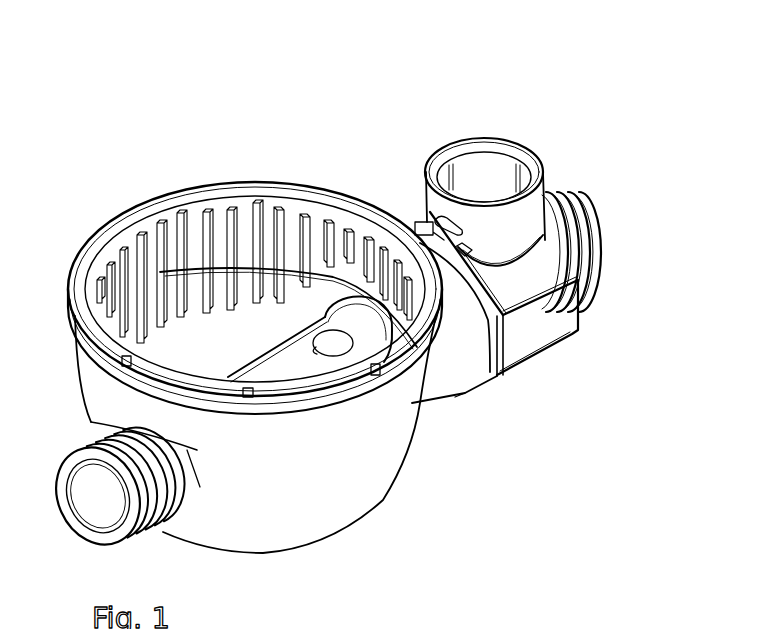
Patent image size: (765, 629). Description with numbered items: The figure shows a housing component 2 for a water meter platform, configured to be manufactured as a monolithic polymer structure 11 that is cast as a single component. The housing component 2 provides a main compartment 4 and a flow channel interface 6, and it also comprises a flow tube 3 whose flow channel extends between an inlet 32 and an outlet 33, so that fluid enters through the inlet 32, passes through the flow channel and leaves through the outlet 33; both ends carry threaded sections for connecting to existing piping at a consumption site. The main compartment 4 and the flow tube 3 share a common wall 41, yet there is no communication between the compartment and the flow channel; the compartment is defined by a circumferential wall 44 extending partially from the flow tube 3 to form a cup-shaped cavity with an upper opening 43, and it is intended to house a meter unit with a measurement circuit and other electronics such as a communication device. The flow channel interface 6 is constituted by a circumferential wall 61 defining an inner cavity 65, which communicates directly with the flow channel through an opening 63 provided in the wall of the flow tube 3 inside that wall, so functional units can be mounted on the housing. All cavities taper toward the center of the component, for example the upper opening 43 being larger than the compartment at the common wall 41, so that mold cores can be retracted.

The housing component 2 is at (370, 290).
The flow tube 3 is at (458, 342).
The main compartment 4 is at (187, 212).
The flow channel interface 6 is at (506, 160).
The monolithic polymer structure 11 is at (313, 487).
The inlet 32 is at (62, 450).
The outlet 33 is at (597, 242).
The common wall 41 is at (290, 356).
The upper opening 43 is at (291, 198).
The circumferential wall 44 is at (398, 415).
The circumferential wall 61 is at (580, 210).
The opening 63 is at (505, 145).
The inner cavity 65 is at (477, 185).